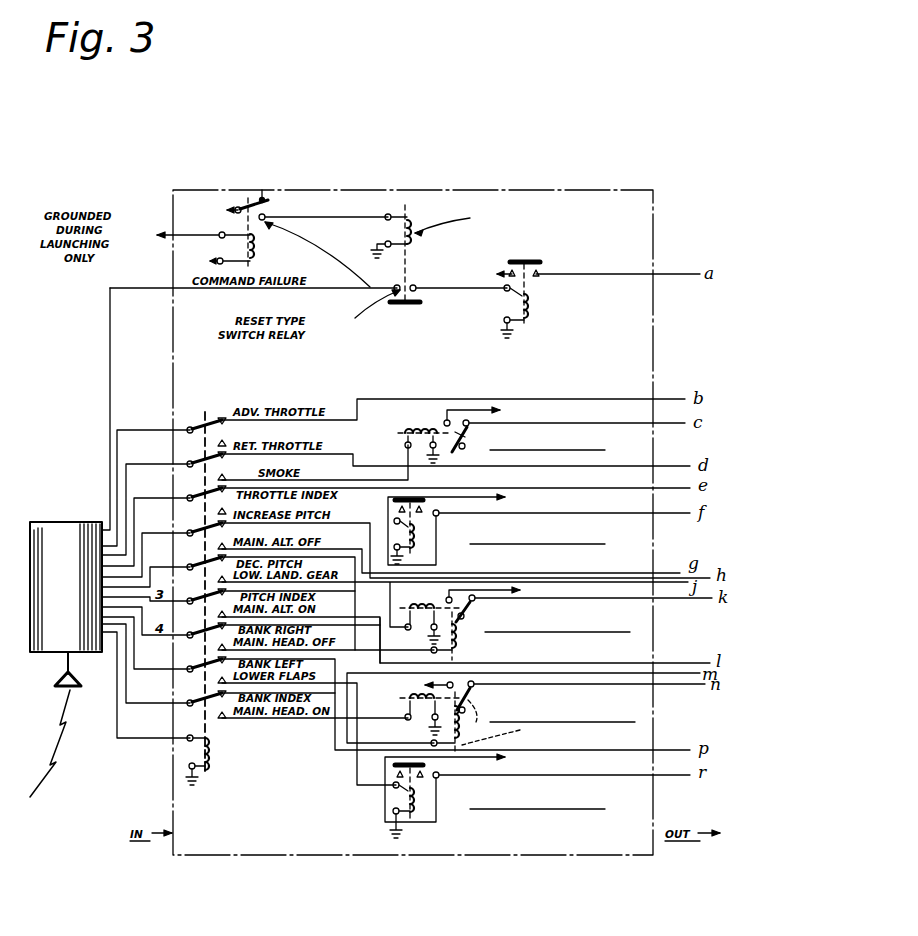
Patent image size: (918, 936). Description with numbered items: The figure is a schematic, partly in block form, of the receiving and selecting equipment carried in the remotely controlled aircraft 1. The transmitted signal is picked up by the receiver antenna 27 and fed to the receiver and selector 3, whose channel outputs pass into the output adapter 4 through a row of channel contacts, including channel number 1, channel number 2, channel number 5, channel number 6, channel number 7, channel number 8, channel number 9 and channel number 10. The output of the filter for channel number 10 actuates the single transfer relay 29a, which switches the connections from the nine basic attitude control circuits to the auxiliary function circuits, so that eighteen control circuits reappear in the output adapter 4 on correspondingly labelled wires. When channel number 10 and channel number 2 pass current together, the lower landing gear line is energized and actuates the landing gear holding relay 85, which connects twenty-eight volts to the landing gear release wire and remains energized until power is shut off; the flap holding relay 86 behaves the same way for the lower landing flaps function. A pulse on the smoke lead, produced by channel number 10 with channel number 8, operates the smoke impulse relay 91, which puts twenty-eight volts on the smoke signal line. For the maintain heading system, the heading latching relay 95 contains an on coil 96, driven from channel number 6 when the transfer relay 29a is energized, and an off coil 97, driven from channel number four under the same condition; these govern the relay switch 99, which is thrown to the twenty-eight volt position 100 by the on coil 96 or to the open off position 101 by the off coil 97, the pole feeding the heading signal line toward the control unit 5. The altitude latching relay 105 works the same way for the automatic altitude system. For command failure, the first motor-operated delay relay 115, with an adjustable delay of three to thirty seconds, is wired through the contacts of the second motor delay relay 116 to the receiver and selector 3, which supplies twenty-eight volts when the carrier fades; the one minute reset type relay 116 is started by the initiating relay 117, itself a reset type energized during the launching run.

The receiver and selector 3 is at (60, 538).
The output adapter 4 is at (500, 858).
The receiver antenna 27 is at (58, 680).
The single transfer relay 29a is at (212, 762).
The landing gear holding relay 85 is at (418, 540).
The flap holding relay 86 is at (418, 800).
The smoke impulse relay 91 is at (418, 428).
The heading latching relay 95 is at (538, 716).
The on coil 96 is at (408, 700).
The off coil 97 is at (448, 730).
The relay switch 99 is at (472, 694).
The +28 volt position 100 is at (465, 665).
The off position 101 is at (491, 722).
The altitude latching relay 105 is at (462, 642).
The first motor-operated delay relay 115 is at (530, 274).
The second motor delay relay 116 is at (410, 262).
The initiating relay 117 is at (256, 258).
The aircraft 1 is at (190, 534).
The channel number 2 is at (190, 567).
The control unit 5 is at (190, 669).
The channel number 6 is at (190, 703).
The channel number 7 is at (190, 431).
The channel number 8 is at (190, 465).
The channel number 9 is at (190, 499).
The channel number 10 is at (177, 732).